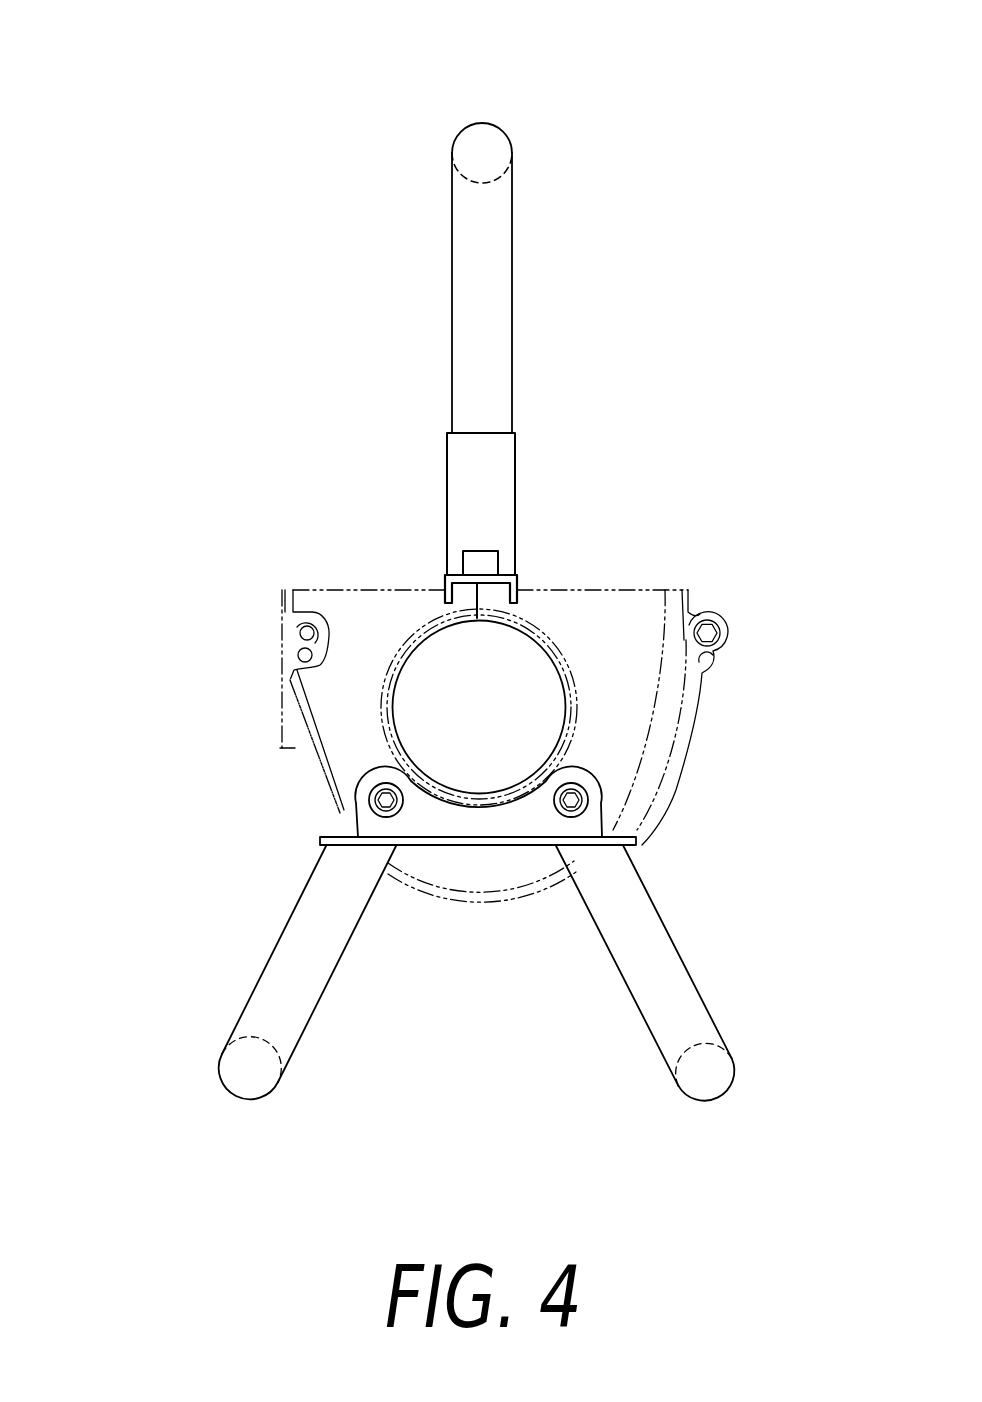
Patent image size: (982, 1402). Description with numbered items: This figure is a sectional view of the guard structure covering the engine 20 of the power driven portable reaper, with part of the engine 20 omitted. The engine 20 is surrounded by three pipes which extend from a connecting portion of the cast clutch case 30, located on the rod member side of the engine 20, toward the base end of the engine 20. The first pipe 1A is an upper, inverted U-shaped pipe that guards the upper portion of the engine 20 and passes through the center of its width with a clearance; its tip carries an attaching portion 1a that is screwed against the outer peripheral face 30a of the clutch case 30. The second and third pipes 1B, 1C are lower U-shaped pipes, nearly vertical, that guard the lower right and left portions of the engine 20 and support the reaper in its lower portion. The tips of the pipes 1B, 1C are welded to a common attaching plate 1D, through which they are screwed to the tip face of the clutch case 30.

The first pipe 1A is at (487, 140).
The attaching portion 1a is at (518, 583).
The second pipe 1B is at (680, 983).
The third pipe 1C is at (270, 972).
The attaching plate 1D is at (355, 830).
The engine 20 is at (663, 752).
The clutch case 30 is at (618, 688).
The outer peripheral face 30a is at (477, 585).